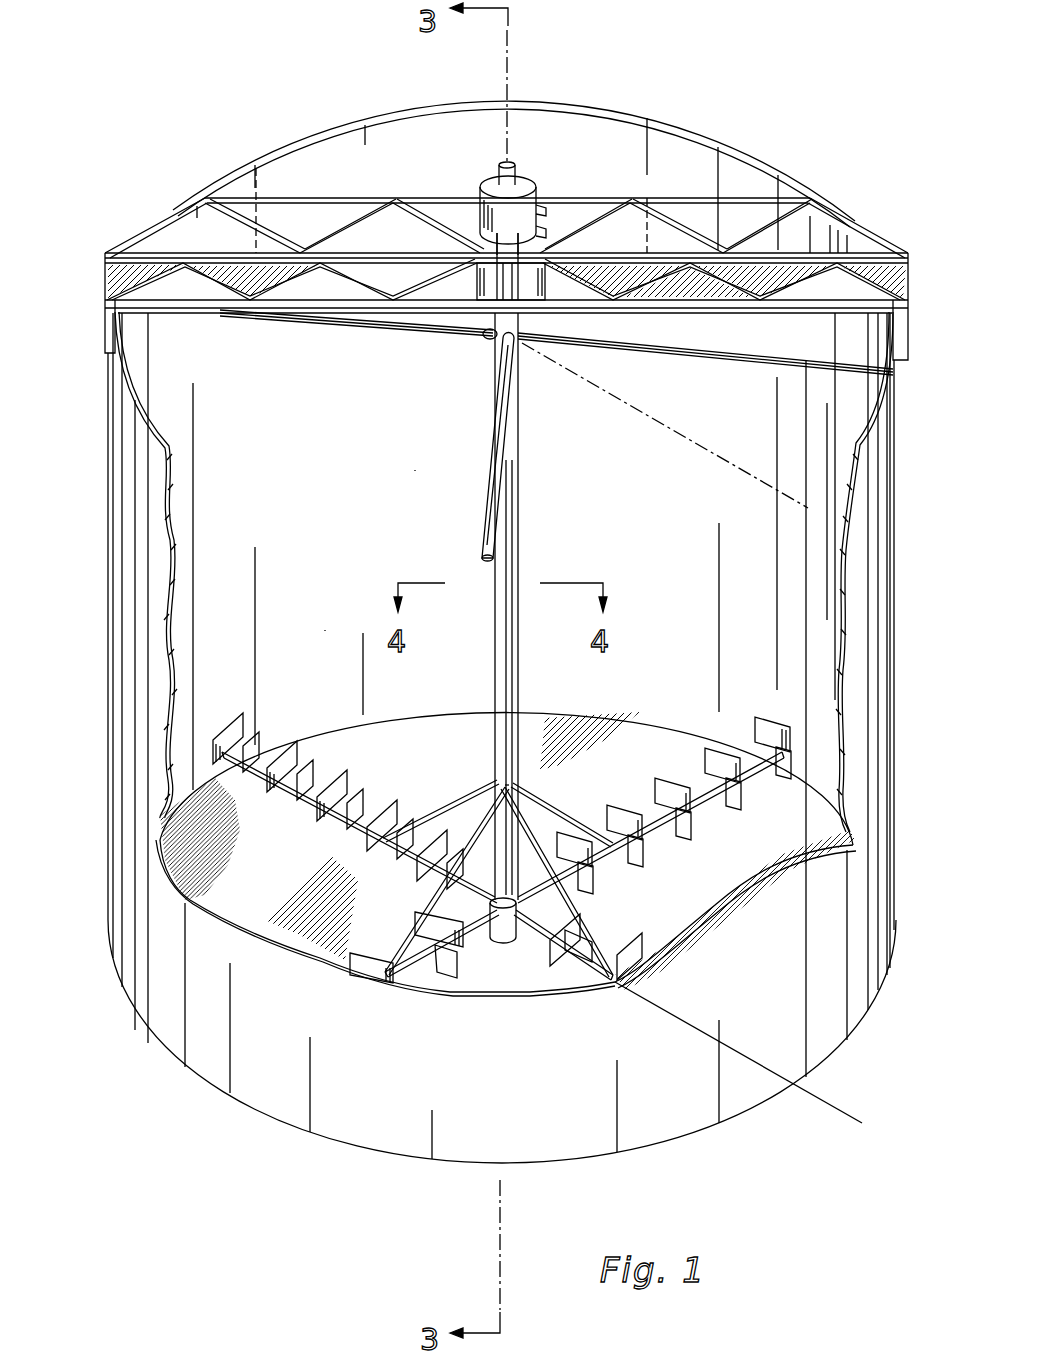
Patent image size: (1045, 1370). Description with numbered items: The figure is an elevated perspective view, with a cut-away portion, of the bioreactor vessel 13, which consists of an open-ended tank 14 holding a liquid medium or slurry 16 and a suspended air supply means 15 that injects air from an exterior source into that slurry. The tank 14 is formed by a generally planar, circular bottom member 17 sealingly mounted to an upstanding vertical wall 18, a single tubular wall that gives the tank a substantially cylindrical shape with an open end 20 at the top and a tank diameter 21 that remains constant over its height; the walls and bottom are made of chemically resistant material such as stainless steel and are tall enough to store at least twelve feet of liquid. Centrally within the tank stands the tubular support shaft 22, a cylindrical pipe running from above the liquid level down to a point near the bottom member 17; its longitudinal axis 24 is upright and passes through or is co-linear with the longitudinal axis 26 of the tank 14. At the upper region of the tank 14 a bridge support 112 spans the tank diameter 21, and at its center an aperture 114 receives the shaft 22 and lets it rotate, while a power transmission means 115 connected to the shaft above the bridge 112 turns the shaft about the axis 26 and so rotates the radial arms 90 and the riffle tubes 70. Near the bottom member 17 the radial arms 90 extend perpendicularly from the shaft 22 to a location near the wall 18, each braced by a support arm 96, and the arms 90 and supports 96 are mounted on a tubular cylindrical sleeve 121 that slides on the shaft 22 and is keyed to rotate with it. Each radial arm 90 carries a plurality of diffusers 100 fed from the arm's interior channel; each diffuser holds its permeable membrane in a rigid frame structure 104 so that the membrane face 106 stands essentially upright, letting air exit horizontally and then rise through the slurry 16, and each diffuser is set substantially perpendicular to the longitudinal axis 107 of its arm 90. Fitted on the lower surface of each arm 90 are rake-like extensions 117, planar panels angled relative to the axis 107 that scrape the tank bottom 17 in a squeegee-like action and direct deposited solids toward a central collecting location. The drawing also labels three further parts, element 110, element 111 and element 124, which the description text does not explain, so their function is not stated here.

The bioreactor vessel 13 is at (896, 620).
The tank 14 is at (896, 718).
The air supply means 15 is at (519, 668).
The liquid medium (slurry) 16 is at (312, 625).
The bottom member 17 is at (680, 897).
The upstanding vertical wall 18 is at (100, 612).
The open end 20 is at (415, 470).
The tank diameter 21 is at (706, 428).
The tubular support shaft 22 is at (520, 490).
The longitudinal axis of shaft 24 is at (505, 1222).
The longitudinal axis of tank 26 is at (503, 940).
The riffle tubes 70 is at (385, 332).
The radial arm 90 is at (245, 740).
The support arm 96 is at (545, 830).
The diffuser 100 is at (348, 805).
The rigid frame structure 104 is at (298, 772).
The membrane face 106 is at (330, 795).
The longitudinal axis of radial arm 107 is at (840, 1112).
The short rake arm 110 is at (521, 903).
The bearing clamp 111 is at (486, 337).
The bridge support 112 is at (297, 300).
The aperture 114 is at (548, 300).
The power transmission means 115 is at (518, 175).
The rake-like extensions 117 is at (330, 860).
The tubular cylindrical sleeve 121 is at (504, 854).
The rake blade 124 is at (487, 910).